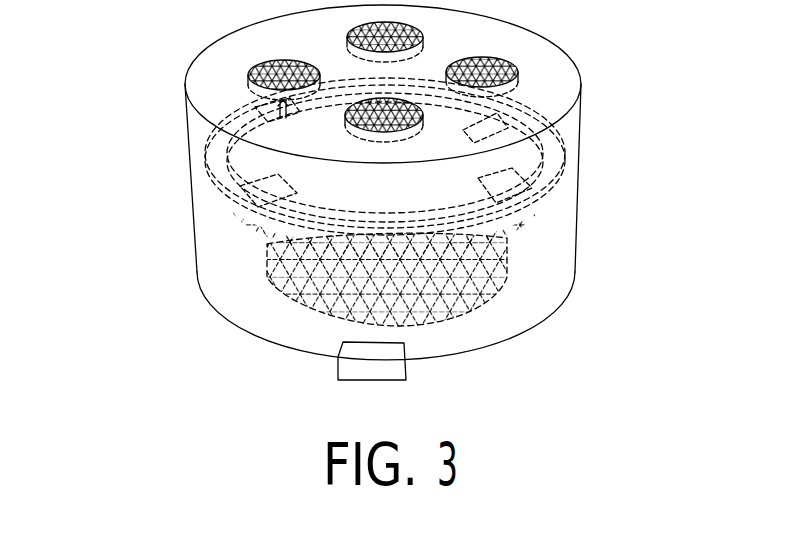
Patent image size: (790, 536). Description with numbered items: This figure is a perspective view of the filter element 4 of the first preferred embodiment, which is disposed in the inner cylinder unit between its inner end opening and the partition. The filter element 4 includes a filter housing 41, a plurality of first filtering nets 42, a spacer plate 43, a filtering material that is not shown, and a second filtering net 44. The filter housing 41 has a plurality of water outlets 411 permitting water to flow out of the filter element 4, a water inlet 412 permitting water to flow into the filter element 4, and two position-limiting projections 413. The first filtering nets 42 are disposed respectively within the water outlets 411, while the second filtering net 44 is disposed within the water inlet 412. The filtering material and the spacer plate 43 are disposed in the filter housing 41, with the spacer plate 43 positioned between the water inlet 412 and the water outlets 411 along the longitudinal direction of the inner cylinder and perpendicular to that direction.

The filter element 4 is at (178, 158).
The filter housing 41 is at (576, 194).
The water outlets 411 is at (278, 108).
The water inlet 412 is at (268, 250).
The position-limiting projections 413 is at (352, 368).
The first filtering nets 42 is at (498, 62).
The spacer plate 43 is at (556, 152).
The second filtering net 44 is at (503, 283).